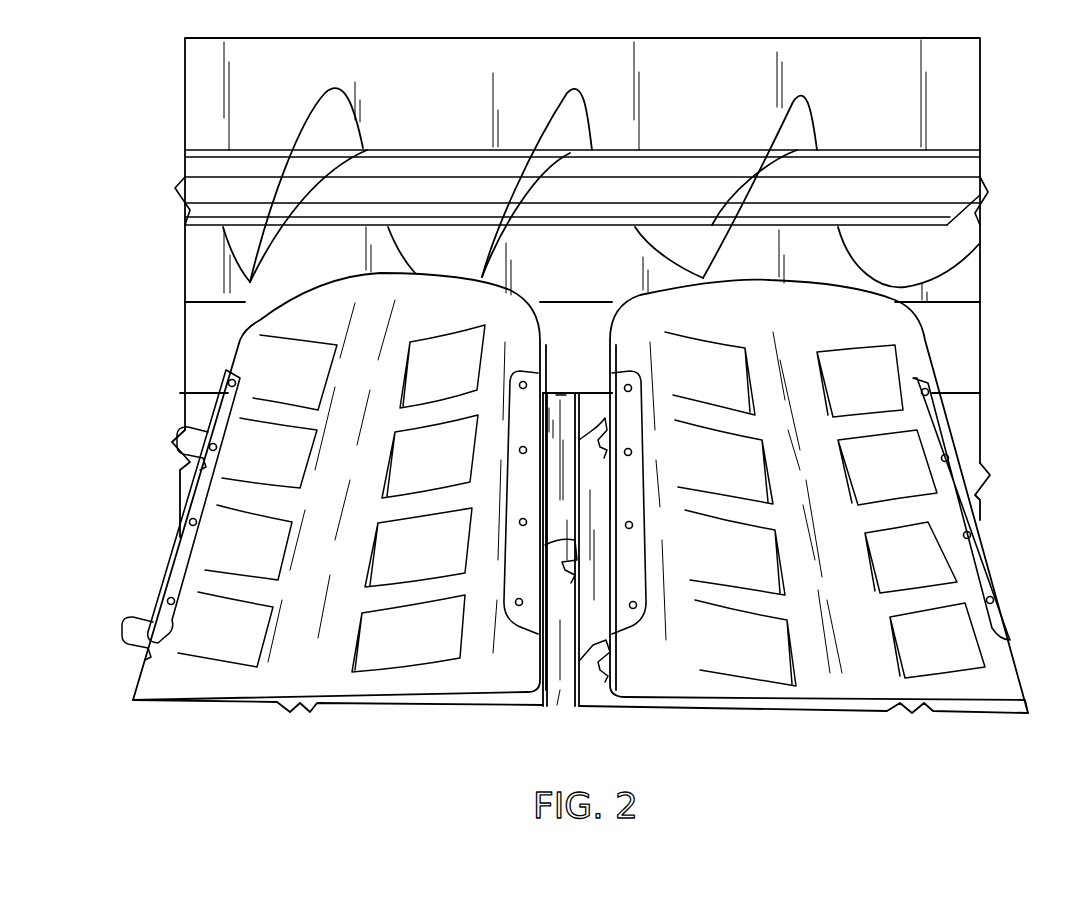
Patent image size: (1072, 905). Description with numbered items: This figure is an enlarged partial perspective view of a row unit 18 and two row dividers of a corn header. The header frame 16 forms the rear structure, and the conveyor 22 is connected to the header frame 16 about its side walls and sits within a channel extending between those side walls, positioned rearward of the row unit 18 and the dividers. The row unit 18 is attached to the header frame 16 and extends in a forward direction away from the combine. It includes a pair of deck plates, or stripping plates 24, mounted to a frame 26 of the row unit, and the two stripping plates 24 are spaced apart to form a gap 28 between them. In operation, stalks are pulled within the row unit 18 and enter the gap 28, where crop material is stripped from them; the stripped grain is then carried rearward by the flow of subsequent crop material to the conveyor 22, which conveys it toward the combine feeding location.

The header frame 16 is at (463, 38).
The conveyor 22 is at (375, 170).
The deck plate 24 is at (557, 708).
The frame of the row unit 26 is at (553, 327).
The gap 28 is at (577, 706).
The row unit 18 is at (573, 392).